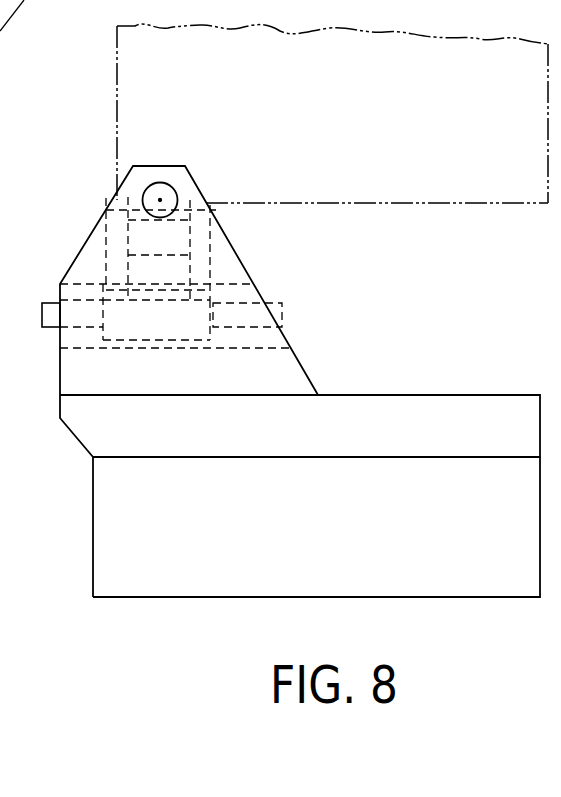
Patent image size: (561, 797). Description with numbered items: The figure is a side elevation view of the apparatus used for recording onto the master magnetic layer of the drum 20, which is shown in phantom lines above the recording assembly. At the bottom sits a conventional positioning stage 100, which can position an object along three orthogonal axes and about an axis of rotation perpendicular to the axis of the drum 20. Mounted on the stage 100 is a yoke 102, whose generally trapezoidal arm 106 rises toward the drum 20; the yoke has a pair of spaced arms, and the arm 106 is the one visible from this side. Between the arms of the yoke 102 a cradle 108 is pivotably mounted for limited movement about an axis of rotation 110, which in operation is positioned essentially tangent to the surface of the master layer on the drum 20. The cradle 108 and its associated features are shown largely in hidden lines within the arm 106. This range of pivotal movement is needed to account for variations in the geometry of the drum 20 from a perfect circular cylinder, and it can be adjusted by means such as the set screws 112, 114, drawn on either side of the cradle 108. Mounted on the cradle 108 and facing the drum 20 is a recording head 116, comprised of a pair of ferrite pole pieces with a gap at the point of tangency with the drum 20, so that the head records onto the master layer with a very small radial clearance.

The drum 20 is at (449, 195).
The positioning stage 100 is at (336, 537).
The yoke 102 is at (95, 431).
The arm 106 is at (230, 255).
The cradle 108 is at (142, 326).
The axis of rotation 110 is at (160, 200).
The set screw 112 is at (42, 330).
The set screw 114 is at (280, 313).
The recording head 116 is at (108, 252).